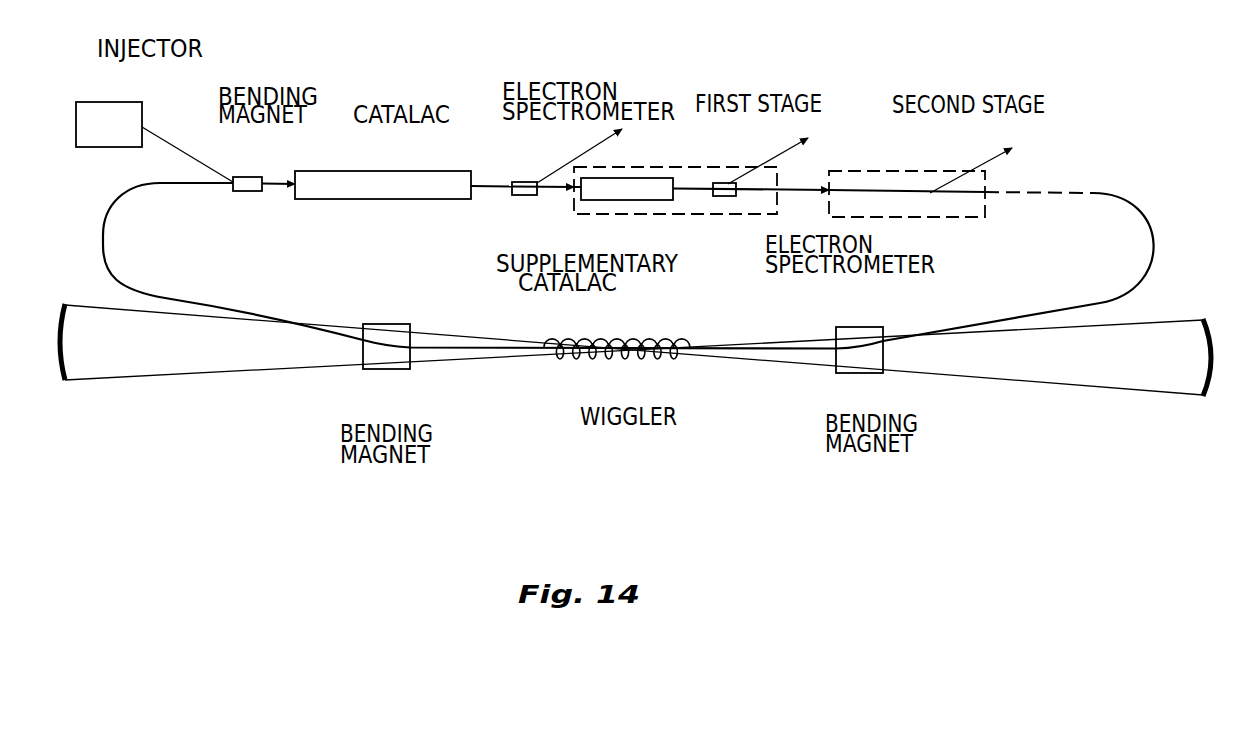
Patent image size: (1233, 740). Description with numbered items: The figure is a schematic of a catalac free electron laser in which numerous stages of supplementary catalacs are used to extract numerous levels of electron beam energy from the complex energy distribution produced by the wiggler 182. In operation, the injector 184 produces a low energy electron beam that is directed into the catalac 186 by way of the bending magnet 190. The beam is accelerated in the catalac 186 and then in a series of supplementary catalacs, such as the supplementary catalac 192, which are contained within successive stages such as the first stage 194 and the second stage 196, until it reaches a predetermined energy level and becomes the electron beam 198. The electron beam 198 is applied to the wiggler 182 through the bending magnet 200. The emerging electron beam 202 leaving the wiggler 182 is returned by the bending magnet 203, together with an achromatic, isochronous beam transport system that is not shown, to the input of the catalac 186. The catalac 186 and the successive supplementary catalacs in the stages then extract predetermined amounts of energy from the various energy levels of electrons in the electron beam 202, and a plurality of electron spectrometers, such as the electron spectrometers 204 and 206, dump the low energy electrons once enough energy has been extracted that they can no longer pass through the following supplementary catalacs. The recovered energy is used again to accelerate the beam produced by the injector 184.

The wiggler 182 is at (623, 352).
The injector 184 is at (104, 104).
The catalac 186 is at (412, 173).
The bending magnet 190 is at (247, 177).
The supplementary catalac 192 is at (630, 197).
The first stage 194 is at (715, 165).
The second stage 196 is at (922, 168).
The electron beam 198 is at (1140, 216).
The bending magnet 200 is at (865, 369).
The emerging electron beam 202 is at (103, 258).
The bending magnet 203 is at (393, 366).
The electron spectrometer 204 is at (518, 182).
The electron spectrometer 206 is at (724, 196).